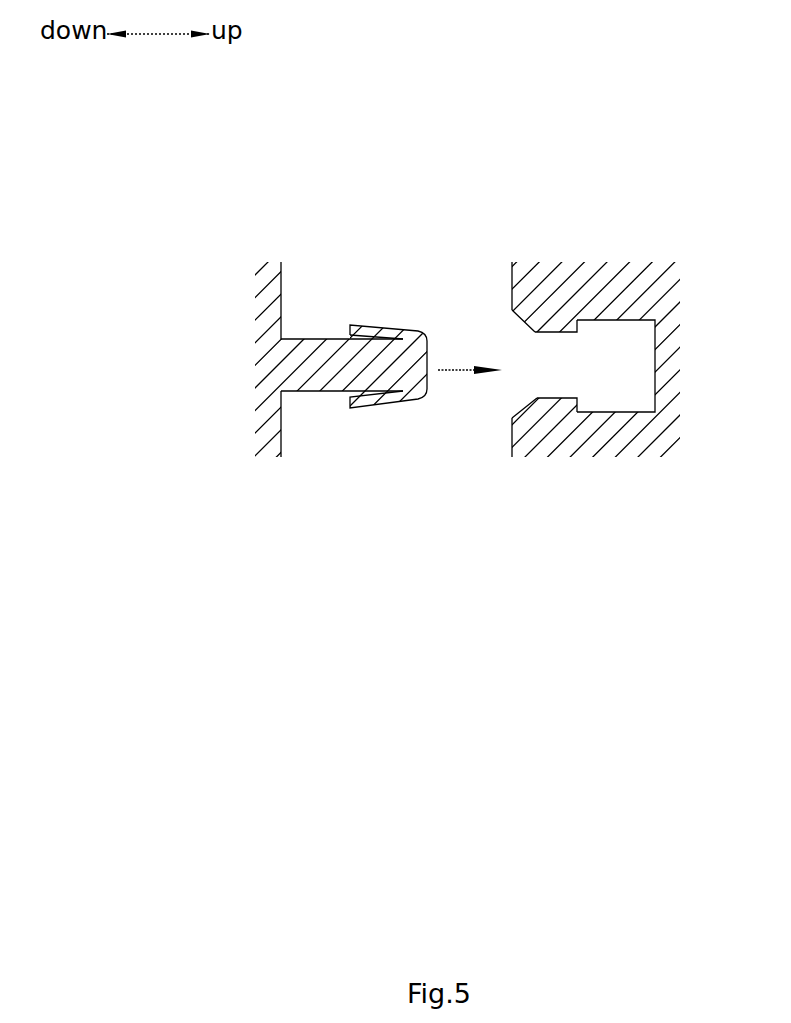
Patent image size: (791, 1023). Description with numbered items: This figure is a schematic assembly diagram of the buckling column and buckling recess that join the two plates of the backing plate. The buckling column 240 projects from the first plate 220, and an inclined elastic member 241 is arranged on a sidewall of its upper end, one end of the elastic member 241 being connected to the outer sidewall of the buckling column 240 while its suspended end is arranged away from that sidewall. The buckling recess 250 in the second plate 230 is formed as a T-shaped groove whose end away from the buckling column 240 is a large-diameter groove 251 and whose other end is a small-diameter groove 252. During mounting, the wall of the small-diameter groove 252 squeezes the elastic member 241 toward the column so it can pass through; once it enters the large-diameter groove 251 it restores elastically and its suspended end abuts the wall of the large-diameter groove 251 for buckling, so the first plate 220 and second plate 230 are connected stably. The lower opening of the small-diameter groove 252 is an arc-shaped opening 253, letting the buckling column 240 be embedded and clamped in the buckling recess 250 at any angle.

The first plate 220 is at (268, 298).
The second plate 230 is at (505, 376).
The buckling column 240 is at (322, 378).
The elastic member 241 is at (350, 323).
The buckling recess 250 is at (505, 413).
The large-diameter groove 251 is at (645, 404).
The small-diameter groove 252 is at (558, 392).
The arc-shaped opening 253 is at (532, 400).